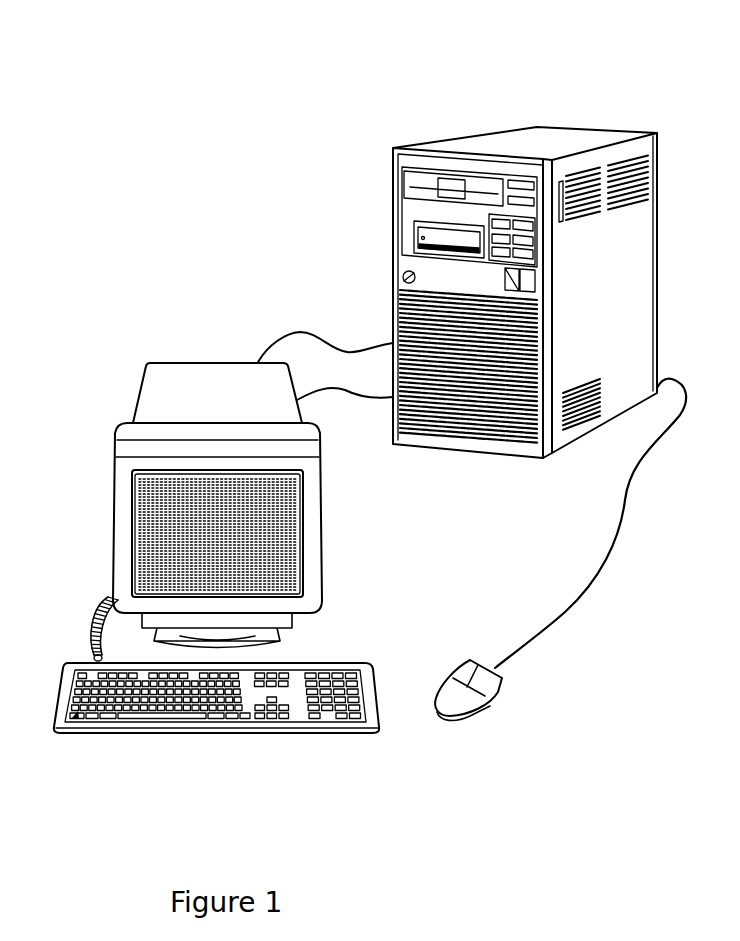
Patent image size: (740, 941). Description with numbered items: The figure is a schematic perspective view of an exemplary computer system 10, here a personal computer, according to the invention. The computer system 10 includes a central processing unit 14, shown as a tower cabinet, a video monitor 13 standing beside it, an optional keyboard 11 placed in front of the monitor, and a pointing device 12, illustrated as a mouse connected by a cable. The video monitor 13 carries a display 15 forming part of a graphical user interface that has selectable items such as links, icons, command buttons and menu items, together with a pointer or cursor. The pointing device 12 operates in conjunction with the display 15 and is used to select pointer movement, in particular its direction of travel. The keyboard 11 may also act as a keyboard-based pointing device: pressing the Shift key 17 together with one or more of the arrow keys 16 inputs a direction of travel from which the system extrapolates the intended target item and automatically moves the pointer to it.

The computer system 10 is at (213, 81).
The keyboard 11 is at (240, 730).
The pointing device 12 is at (473, 707).
The video monitor 13 is at (228, 378).
The central processing unit 14 is at (398, 262).
The display 15 is at (146, 530).
The arrow keys 16 is at (288, 740).
The Shift key 17 is at (62, 732).